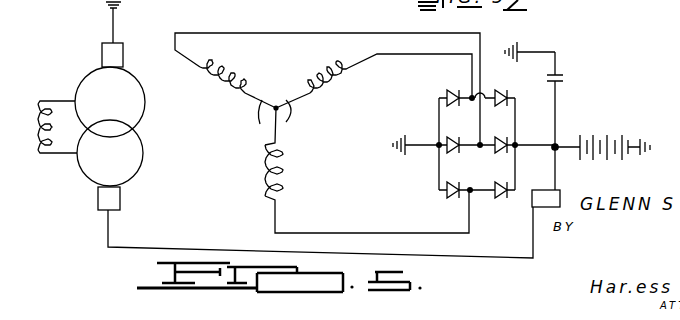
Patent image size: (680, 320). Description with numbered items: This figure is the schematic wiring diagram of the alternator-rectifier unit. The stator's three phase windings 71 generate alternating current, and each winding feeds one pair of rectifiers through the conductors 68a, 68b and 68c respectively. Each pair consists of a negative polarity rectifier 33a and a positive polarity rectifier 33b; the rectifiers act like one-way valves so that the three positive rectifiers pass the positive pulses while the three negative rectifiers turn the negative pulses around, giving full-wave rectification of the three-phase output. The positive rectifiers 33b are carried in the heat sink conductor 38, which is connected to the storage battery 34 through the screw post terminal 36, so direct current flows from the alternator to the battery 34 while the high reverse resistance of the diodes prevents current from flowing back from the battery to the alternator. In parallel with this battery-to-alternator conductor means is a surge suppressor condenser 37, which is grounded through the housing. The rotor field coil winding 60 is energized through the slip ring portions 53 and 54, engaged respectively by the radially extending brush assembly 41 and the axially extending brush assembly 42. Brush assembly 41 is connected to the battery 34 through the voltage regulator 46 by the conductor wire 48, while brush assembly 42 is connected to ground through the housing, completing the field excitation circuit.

The axially extending brush assembly 42 is at (143, 42).
The slip ring portion 54 is at (178, 90).
The slip ring portion 53 is at (142, 155).
The radially extending brush assembly 41 is at (120, 198).
The rotor field coil winding 60 is at (60, 153).
The conductor wire 48 is at (457, 258).
The conductor 68a is at (320, 32).
The conductor 68b is at (358, 62).
The conductor 68c is at (387, 215).
The three phase windings 71 is at (287, 118).
The negative polarity rectifiers 33a is at (447, 193).
The positive polarity rectifiers 33b is at (498, 207).
The heat sink conductor 38 is at (438, 162).
The surge suppressor condenser 37 is at (562, 79).
The screw post terminal 36 is at (555, 145).
The storage battery 34 is at (606, 135).
The voltage regulator 46 is at (559, 190).